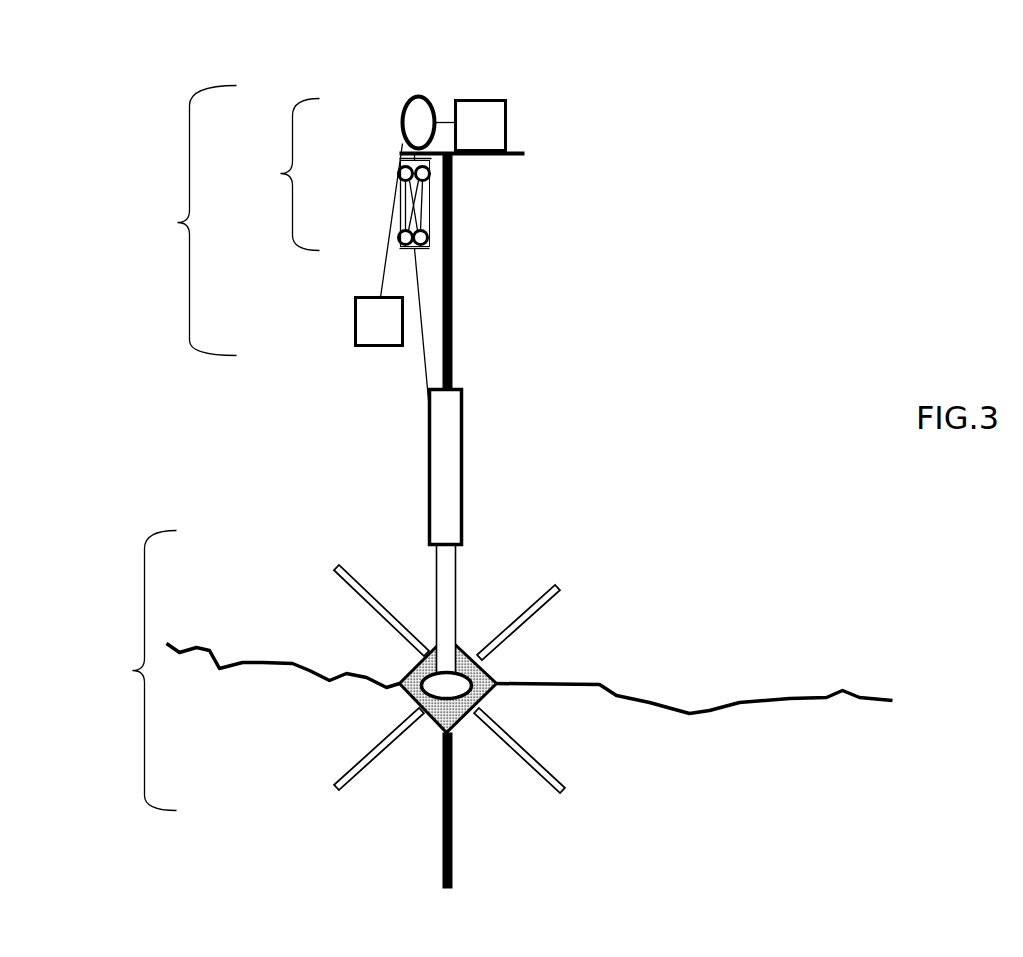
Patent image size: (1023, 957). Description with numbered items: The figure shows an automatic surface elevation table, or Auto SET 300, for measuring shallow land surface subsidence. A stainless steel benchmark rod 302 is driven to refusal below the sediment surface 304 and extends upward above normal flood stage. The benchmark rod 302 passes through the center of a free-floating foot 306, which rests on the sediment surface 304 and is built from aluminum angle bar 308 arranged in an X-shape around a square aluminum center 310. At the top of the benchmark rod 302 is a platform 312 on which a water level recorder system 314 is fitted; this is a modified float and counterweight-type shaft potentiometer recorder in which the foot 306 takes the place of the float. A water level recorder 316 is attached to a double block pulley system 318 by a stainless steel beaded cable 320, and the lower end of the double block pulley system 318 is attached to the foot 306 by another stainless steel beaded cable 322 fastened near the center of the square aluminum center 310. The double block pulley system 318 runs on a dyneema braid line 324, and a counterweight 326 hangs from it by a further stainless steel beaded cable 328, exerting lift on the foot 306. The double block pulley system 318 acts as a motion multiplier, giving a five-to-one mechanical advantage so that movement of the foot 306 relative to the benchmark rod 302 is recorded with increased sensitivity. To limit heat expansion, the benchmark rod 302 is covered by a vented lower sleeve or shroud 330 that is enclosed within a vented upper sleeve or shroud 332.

The automatic surface elevation table (Auto SET) 300 is at (741, 158).
The benchmark rod 302 is at (455, 305).
The sediment surface 304 is at (263, 662).
The free-floating foot 306 is at (133, 670).
The aluminum angle bar 308 is at (560, 590).
The square aluminum center 310 is at (407, 670).
The platform 312 is at (517, 155).
The water level recorder system 314 is at (178, 222).
The water level recorder 316 is at (508, 120).
The double block pulley system 318 is at (281, 173).
The stainless steel beaded cable 320 is at (450, 122).
The stainless steel beaded cable 322 is at (420, 363).
The line 324 is at (400, 222).
The counterweight 326 is at (356, 340).
The stainless steel beaded cable 328 is at (390, 253).
The vented lower sleeve or shroud 330 is at (458, 575).
The vented upper sleeve or shroud 332 is at (463, 418).